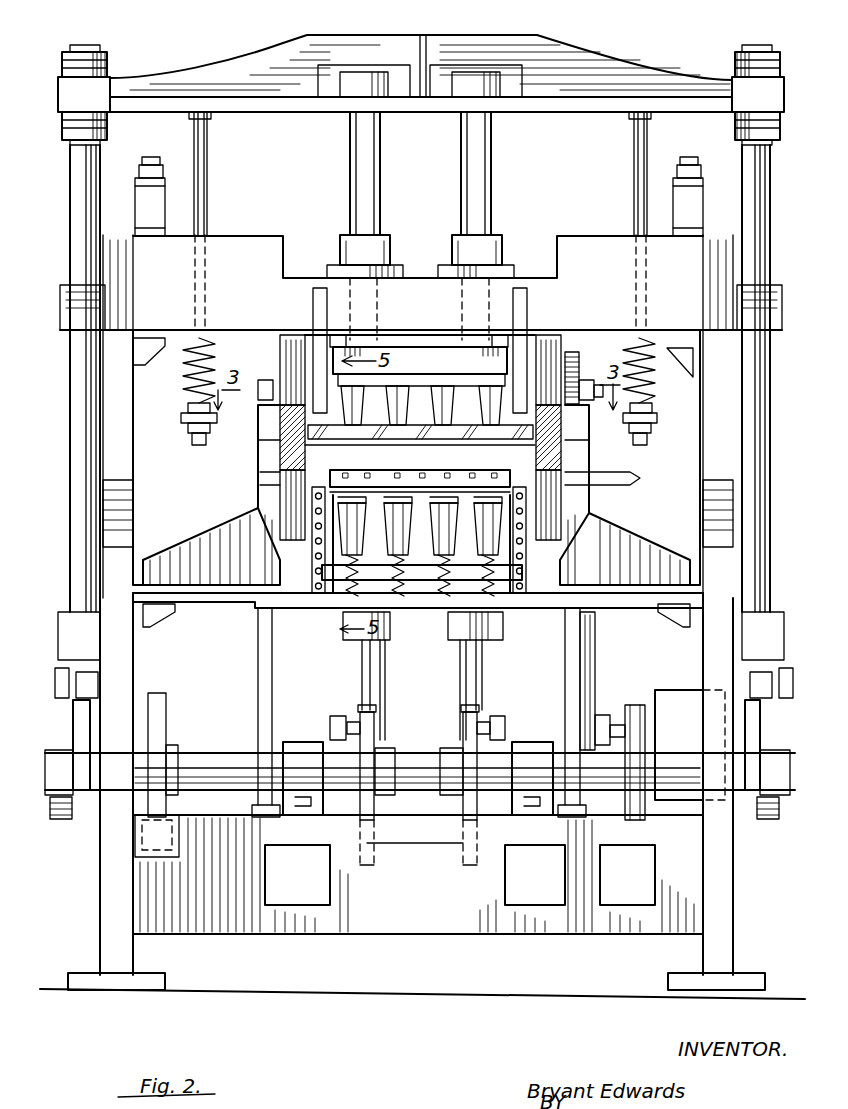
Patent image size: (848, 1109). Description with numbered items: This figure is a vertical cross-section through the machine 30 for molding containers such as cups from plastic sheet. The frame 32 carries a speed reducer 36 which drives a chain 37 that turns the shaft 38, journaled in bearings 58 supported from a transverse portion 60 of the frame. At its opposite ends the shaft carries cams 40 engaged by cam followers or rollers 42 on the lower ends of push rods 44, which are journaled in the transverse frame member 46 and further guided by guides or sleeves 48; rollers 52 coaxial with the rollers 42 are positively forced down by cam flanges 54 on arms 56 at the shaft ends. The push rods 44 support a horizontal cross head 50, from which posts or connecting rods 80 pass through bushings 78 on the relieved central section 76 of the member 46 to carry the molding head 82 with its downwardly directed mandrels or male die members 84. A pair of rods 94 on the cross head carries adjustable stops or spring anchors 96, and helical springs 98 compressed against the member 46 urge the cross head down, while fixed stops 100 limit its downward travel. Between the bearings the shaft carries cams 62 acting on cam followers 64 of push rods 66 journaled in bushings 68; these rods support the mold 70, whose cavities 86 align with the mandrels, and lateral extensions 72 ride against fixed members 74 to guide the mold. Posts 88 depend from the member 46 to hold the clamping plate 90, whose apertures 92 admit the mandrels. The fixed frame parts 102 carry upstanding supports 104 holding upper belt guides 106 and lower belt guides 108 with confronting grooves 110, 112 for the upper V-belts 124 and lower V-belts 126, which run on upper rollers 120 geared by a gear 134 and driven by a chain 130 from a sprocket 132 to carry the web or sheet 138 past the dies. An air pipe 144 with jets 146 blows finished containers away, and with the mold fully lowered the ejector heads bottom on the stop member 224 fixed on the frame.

The machine 30 is at (200, 62).
The cross head 50 is at (283, 58).
The push rods 44 is at (78, 540).
The posts or connecting rods 80 is at (383, 162).
The bushings 78 is at (383, 240).
The rods 94 is at (208, 168).
The fixed stops 100 is at (163, 160).
The transverse frame member 46 is at (242, 234).
The relieved central section 76 is at (540, 272).
The fixed frame parts 102 is at (176, 548).
The posts 88 is at (290, 342).
The upper rollers 120 is at (282, 358).
The upstanding supports 104 is at (270, 440).
The grooves 110 is at (282, 430).
The grooves 112 is at (280, 442).
The clamping plate 90 is at (283, 458).
The lower belt guides 108 is at (283, 476).
The helical spring 98 is at (192, 345).
The adjustable stops or spring anchors 96 is at (188, 412).
The gear 134 is at (575, 350).
The upper belt guides 106 is at (280, 413).
The molding head 82 is at (421, 348).
The web or sheet 138 is at (458, 370).
The mandrels or male die members 84 is at (378, 488).
The cavities 86 is at (412, 488).
The apertures 92 is at (455, 488).
The jets 146 is at (344, 488).
The upper V-belts 124 is at (480, 470).
The lower V-belts 126 is at (540, 452).
The air pipe 144 is at (445, 545).
The lateral extensions 72 is at (318, 568).
The fixed members 74 is at (312, 540).
The mold 70 is at (342, 632).
The bushings 68 is at (355, 646).
The stop member 224 is at (380, 650).
The push rods 66 is at (466, 661).
The cam followers 64 is at (463, 720).
The cams 62 is at (468, 806).
The shaft 38 is at (190, 760).
The bearings 58 is at (300, 745).
The chain 130 is at (598, 640).
The sprocket 132 is at (598, 715).
The chain 37 is at (646, 755).
The speed reducer 36 is at (673, 690).
The guides or sleeves 48 is at (407, 618).
The cam followers or rollers 42 is at (88, 672).
The rollers 52 is at (88, 702).
The cams 40 is at (78, 726).
The arms 56 is at (48, 800).
The cam flanges 54 is at (72, 800).
The frame 32 is at (108, 906).
The transverse portion 60 is at (414, 933).